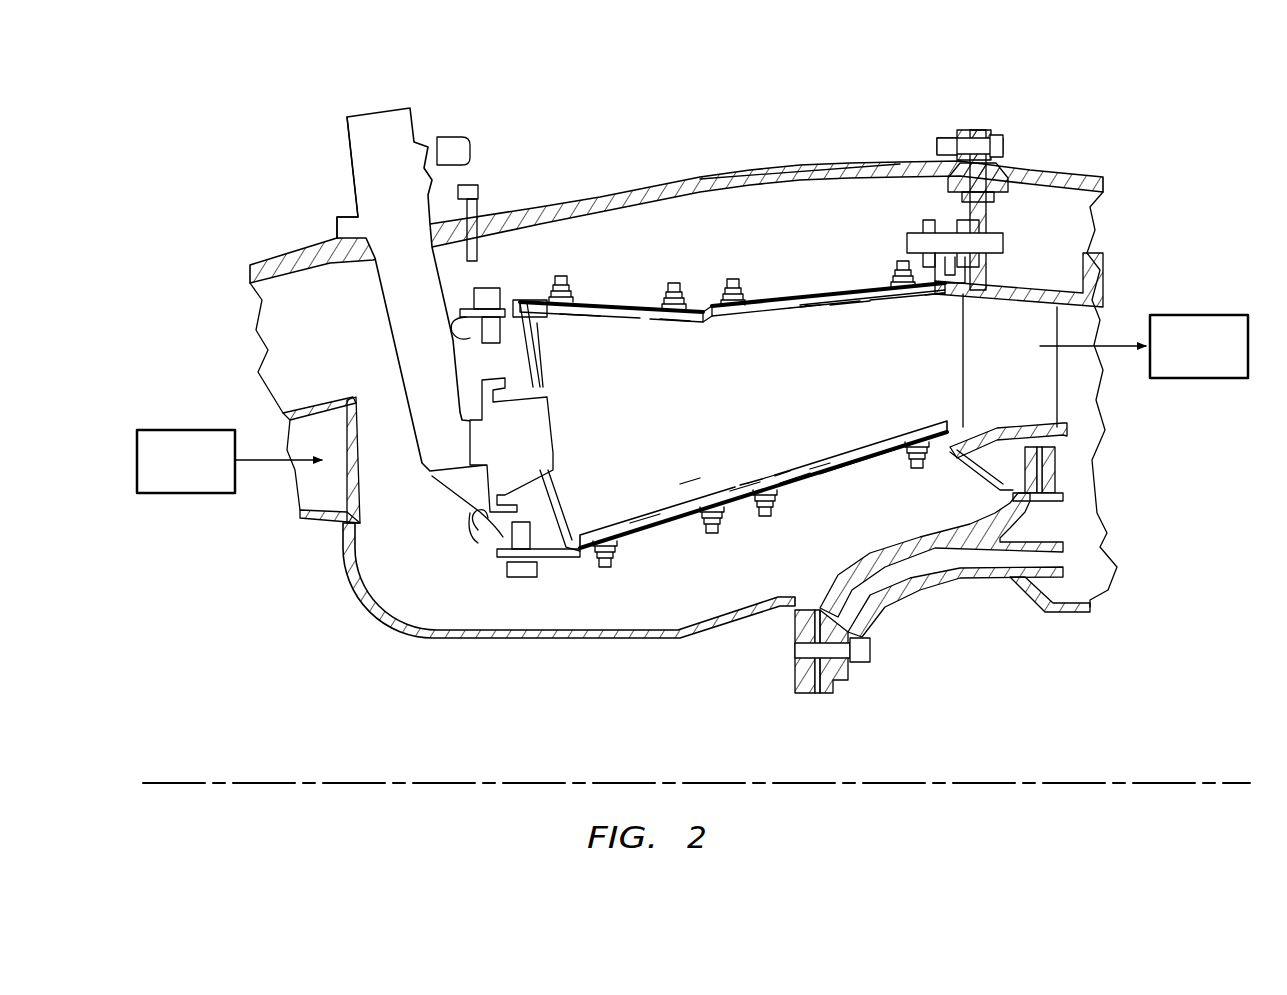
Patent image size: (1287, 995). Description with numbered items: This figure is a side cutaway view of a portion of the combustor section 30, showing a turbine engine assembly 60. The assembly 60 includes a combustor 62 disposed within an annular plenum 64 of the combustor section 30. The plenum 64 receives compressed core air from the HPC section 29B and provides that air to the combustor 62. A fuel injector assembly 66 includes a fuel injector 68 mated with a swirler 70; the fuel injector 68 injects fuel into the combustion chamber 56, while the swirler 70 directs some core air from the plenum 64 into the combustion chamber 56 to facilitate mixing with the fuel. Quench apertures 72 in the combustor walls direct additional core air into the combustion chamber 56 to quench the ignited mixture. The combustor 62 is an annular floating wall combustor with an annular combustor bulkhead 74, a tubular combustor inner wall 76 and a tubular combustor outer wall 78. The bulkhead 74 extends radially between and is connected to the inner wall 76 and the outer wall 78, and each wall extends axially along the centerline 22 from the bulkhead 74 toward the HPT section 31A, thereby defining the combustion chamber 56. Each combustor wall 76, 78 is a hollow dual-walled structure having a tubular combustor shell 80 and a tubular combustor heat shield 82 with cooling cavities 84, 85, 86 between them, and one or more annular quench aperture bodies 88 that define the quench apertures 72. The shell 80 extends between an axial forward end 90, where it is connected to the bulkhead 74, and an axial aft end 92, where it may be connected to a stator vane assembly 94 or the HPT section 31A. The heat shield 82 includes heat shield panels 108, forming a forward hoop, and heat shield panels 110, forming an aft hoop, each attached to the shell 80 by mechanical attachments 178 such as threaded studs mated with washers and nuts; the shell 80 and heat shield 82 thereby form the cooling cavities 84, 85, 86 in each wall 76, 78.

The centerline 22 is at (962, 775).
The HPC section 29B is at (164, 476).
The HPT section 31A is at (1178, 359).
The combustor section 30 is at (1004, 101).
The combustion chamber 56 is at (738, 393).
The turbine engine assembly 60 is at (847, 133).
The combustor 62 is at (691, 280).
The annular plenum 64 is at (636, 243).
The fuel injector assembly 66 is at (418, 478).
The fuel injector 68 is at (378, 300).
The swirler 70 is at (482, 527).
The quench apertures 72 is at (773, 305).
The combustor bulkhead 74 is at (570, 480).
The combustor inner wall 76 is at (718, 543).
The combustor outer wall 78 is at (863, 281).
The combustor shell 80 is at (602, 300).
The combustor heat shield 82 is at (650, 318).
The cooling cavity 84 is at (573, 313).
The cooling cavity 85 is at (800, 311).
The cooling cavity 86 is at (937, 300).
The quench aperture body 88 is at (815, 302).
The axial forward end 90 is at (460, 310).
The axial aft end 92 is at (976, 288).
The stator vane assembly 94 is at (996, 375).
The heat shield panel 108 is at (670, 318).
The heat shield panel 110 is at (852, 303).
The mechanical attachment 178 is at (555, 275).